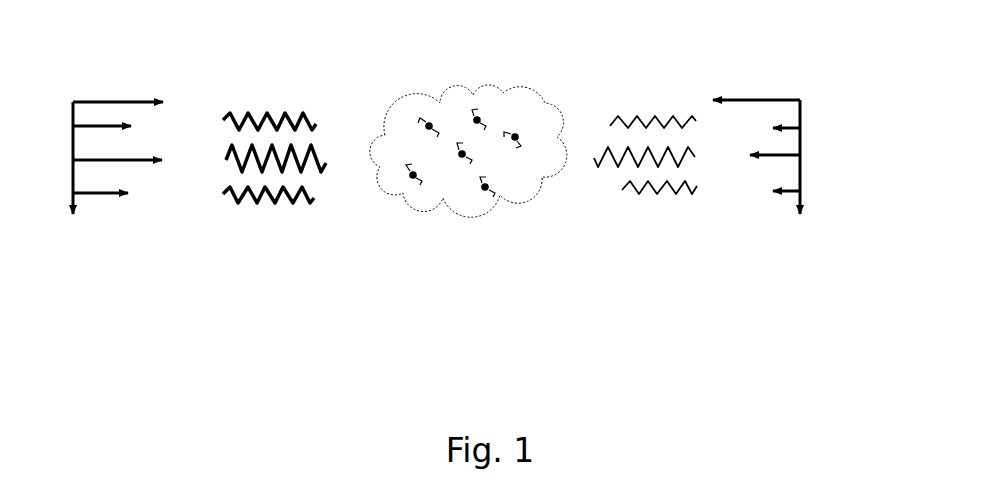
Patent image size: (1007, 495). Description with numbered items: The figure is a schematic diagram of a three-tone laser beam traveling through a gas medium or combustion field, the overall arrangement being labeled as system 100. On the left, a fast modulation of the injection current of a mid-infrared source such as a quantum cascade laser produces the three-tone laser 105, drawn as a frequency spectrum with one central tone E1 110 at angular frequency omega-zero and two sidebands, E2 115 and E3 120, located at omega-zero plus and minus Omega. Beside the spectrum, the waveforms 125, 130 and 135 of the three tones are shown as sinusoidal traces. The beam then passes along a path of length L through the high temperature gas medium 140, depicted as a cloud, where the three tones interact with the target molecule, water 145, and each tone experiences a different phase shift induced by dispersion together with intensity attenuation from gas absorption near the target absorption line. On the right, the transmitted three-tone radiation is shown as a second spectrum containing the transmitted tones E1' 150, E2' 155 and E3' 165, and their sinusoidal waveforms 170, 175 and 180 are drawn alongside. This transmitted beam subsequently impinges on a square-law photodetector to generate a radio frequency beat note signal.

The system 100 is at (799, 351).
The three-tone laser 105 is at (90, 101).
The central tone E1 110 is at (130, 162).
The sideband E2 115 is at (100, 120).
The sideband E3 120 is at (98, 197).
The waveform 125 is at (300, 175).
The waveform 130 is at (265, 112).
The waveform 135 is at (262, 205).
The high temperature gas medium 140 is at (483, 80).
The target molecule H2O 145 is at (413, 165).
The transmitted tone E1' 150 is at (760, 160).
The transmitted sideband E2' 155 is at (785, 120).
The transmitted sideband E3' 165 is at (790, 195).
The waveform 170 is at (620, 172).
The waveform 175 is at (640, 108).
The waveform 180 is at (645, 195).